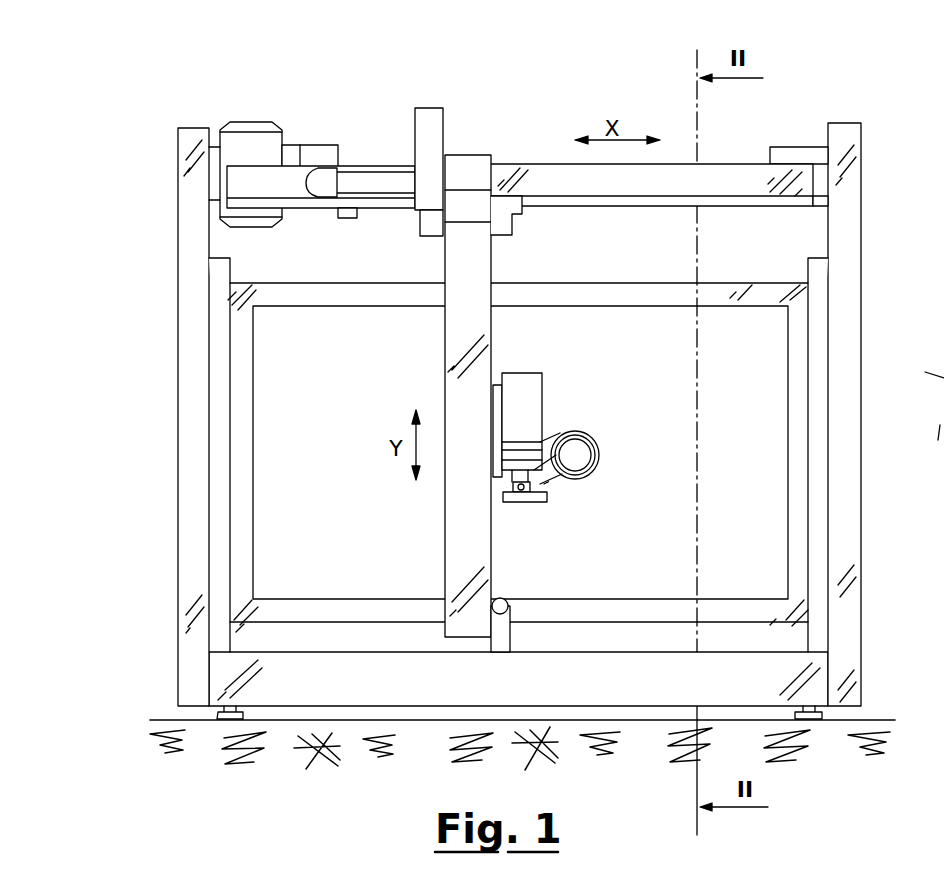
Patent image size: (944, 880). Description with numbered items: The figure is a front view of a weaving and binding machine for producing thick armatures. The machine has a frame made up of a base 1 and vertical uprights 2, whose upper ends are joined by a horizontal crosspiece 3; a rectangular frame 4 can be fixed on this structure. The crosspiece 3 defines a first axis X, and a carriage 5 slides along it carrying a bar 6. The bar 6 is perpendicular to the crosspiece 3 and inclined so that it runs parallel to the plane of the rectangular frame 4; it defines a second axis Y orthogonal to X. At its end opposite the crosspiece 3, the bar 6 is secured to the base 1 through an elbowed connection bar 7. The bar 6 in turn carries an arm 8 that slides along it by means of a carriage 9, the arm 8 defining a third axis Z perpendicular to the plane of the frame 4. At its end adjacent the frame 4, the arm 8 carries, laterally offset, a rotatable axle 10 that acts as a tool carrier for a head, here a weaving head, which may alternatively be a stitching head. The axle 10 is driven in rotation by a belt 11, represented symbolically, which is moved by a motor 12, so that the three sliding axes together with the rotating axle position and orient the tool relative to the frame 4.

The base 1 is at (447, 690).
The vertical uprights 2 is at (197, 388).
The horizontal crosspiece 3 is at (737, 170).
The rectangular frame 4 is at (662, 262).
The carriage 5 is at (378, 134).
The bar 6 is at (455, 327).
The elbowed connection bar 7 is at (500, 600).
The arm 8 is at (522, 374).
The carriage 9 is at (505, 410).
The rotatable axle 10 is at (572, 455).
The belt 11 is at (545, 485).
The motor 12 is at (521, 494).